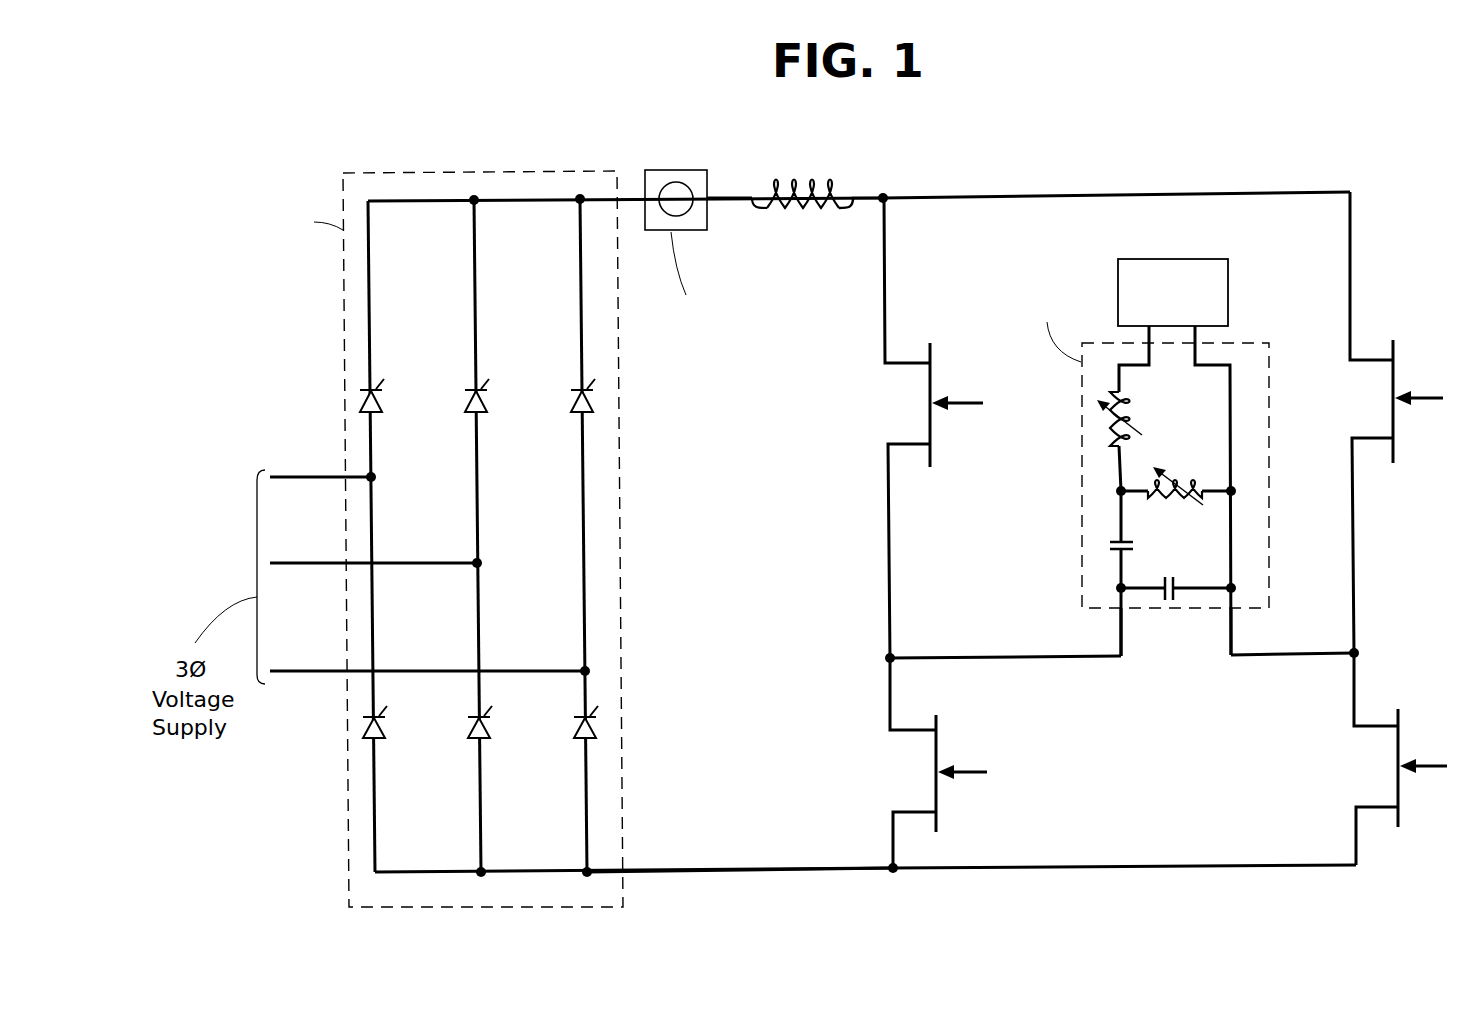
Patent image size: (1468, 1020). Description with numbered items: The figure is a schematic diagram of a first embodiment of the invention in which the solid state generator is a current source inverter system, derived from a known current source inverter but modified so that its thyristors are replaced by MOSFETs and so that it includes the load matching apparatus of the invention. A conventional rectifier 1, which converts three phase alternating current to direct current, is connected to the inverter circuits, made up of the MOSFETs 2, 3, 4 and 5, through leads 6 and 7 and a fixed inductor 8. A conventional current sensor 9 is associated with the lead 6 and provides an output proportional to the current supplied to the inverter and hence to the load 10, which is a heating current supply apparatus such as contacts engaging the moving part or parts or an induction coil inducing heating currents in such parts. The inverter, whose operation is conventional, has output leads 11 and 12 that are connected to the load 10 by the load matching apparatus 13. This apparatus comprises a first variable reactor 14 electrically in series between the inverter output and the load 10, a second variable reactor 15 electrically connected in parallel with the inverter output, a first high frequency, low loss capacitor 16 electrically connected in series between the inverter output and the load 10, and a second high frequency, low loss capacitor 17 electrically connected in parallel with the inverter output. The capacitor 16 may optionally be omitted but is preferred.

The rectifier 1 is at (427, 175).
The MOSFET 2 is at (933, 385).
The MOSFET 3 is at (938, 720).
The MOSFET 4 is at (1395, 380).
The MOSFET 5 is at (1400, 716).
The lead 6 is at (727, 195).
The lead 7 is at (767, 866).
The fixed inductor 8 is at (812, 178).
The current sensor 9 is at (692, 177).
The load 10 is at (1228, 277).
The output lead 11 is at (1232, 637).
The output lead 12 is at (1120, 634).
The load matching apparatus 13 is at (1093, 457).
The first variable reactor 14 is at (1133, 408).
The second variable reactor 15 is at (1178, 478).
The first high frequency, low loss capacitor 16 is at (1130, 540).
The second high frequency low loss capacitor 17 is at (1174, 579).